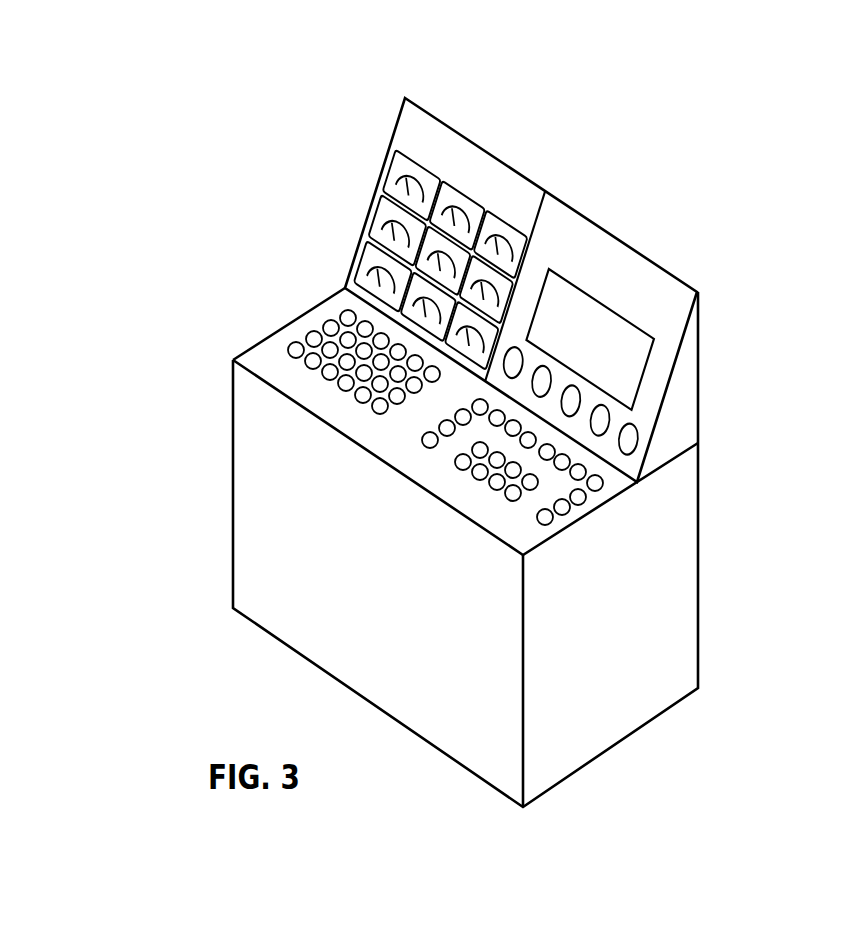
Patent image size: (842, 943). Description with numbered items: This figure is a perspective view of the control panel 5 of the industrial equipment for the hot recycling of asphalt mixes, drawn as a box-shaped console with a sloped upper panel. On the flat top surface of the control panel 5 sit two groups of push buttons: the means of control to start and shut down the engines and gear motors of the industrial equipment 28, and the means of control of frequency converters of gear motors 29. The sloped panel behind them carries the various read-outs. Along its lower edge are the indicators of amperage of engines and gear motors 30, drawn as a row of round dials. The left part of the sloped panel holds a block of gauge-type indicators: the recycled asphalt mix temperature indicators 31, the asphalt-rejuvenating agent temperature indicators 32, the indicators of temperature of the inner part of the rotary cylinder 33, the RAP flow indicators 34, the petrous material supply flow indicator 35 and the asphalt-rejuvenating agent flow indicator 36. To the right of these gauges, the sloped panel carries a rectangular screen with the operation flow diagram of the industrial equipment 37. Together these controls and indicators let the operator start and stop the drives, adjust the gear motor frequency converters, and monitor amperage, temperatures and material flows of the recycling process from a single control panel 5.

The control panel 5 is at (223, 510).
The means of control to start and shut down the engines and gear motors 28 is at (290, 350).
The means of control of frequency converters of gear motors 29 is at (598, 490).
The indicators of amperage of engines and gear motors 30 is at (628, 435).
The recycled asphalt mix temperature indicators 31 is at (398, 155).
The asphalt-rejuvenating agent temperature indicators 32 is at (447, 190).
The indicators of temperature of the inner part of the rotary cylinder 33 is at (487, 218).
The RAP flow indicators 34 is at (378, 222).
The petrous material supply flow indicator 35 is at (367, 280).
The asphalt-rejuvenating agent flow indicator 36 is at (481, 287).
The screen with the operation flow diagram of the industrial equipment 37 is at (592, 312).